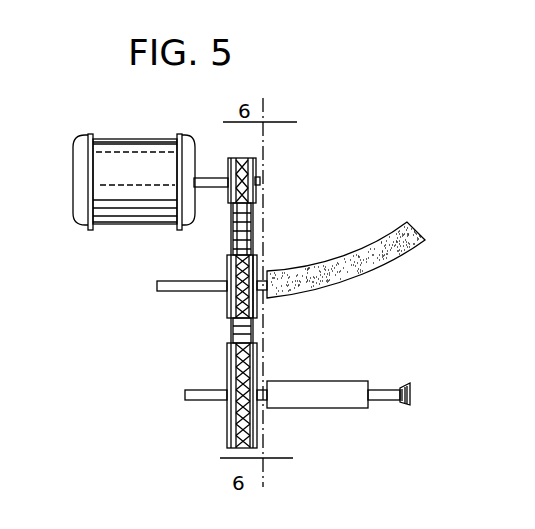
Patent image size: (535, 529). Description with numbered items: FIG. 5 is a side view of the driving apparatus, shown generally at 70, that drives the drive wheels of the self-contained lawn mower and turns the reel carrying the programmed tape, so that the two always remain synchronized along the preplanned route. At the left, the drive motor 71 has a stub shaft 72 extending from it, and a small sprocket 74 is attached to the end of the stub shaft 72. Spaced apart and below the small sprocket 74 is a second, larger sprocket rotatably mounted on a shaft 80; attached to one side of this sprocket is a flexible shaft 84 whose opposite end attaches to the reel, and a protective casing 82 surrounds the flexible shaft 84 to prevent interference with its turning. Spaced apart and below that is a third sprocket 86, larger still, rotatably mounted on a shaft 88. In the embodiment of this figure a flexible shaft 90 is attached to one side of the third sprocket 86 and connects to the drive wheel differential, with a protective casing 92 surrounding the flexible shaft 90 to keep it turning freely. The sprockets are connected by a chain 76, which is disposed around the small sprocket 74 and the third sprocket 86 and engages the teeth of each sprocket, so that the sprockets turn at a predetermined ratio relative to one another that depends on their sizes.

The means to drive the drive wheels and turn the reel 70 is at (66, 200).
The drive motor 71 is at (152, 132).
The stub shaft 72 is at (212, 180).
The small sprocket 74 is at (295, 170).
The chain 76 is at (251, 244).
The shaft 80 is at (208, 280).
The protective casing 82 is at (345, 265).
The flexible shaft 84 is at (259, 298).
The third sprocket 86 is at (256, 373).
The shaft 88 is at (212, 390).
The flexible shaft 90 is at (383, 392).
The protective casing 92 is at (353, 380).